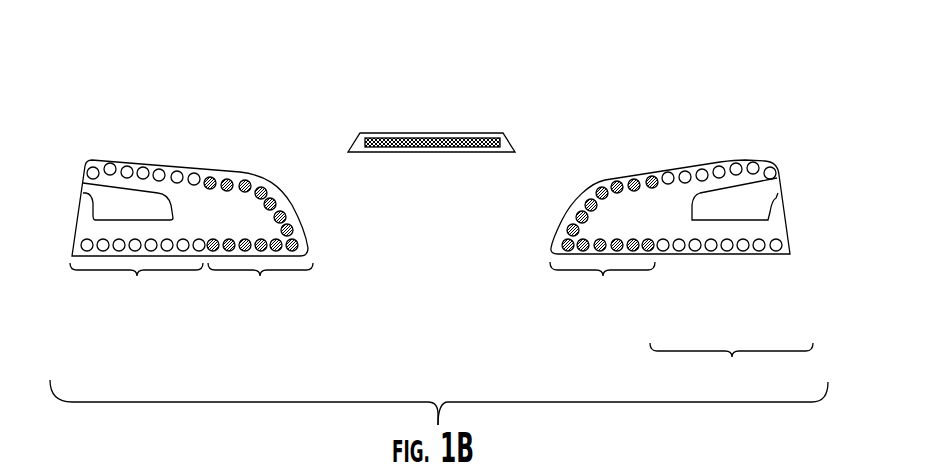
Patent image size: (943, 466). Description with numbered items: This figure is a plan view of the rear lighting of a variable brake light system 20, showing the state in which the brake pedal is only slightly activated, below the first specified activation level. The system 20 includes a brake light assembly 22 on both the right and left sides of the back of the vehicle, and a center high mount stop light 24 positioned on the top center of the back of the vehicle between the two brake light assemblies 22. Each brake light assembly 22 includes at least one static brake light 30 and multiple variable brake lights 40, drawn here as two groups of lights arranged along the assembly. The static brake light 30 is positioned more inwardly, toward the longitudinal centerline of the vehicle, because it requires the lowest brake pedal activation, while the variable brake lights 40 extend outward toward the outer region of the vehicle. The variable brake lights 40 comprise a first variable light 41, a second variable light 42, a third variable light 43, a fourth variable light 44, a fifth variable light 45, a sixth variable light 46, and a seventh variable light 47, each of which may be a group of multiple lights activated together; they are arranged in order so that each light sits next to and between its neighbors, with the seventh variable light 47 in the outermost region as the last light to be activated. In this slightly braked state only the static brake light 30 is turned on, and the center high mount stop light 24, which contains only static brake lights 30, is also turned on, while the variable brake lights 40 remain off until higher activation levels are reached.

The variable brake light system 20 is at (735, 52).
The brake light assembly 22 is at (62, 215).
The center high mount stop light 24 is at (500, 165).
The static brake light 30 is at (380, 147).
The variable brake lights 40 is at (441, 279).
The first variable light 41 is at (668, 172).
The second variable light 42 is at (685, 171).
The third variable light 43 is at (702, 169).
The fourth variable light 44 is at (719, 166).
The fifth variable light 45 is at (736, 163).
The sixth variable light 46 is at (753, 162).
The seventh variable light 47 is at (770, 167).